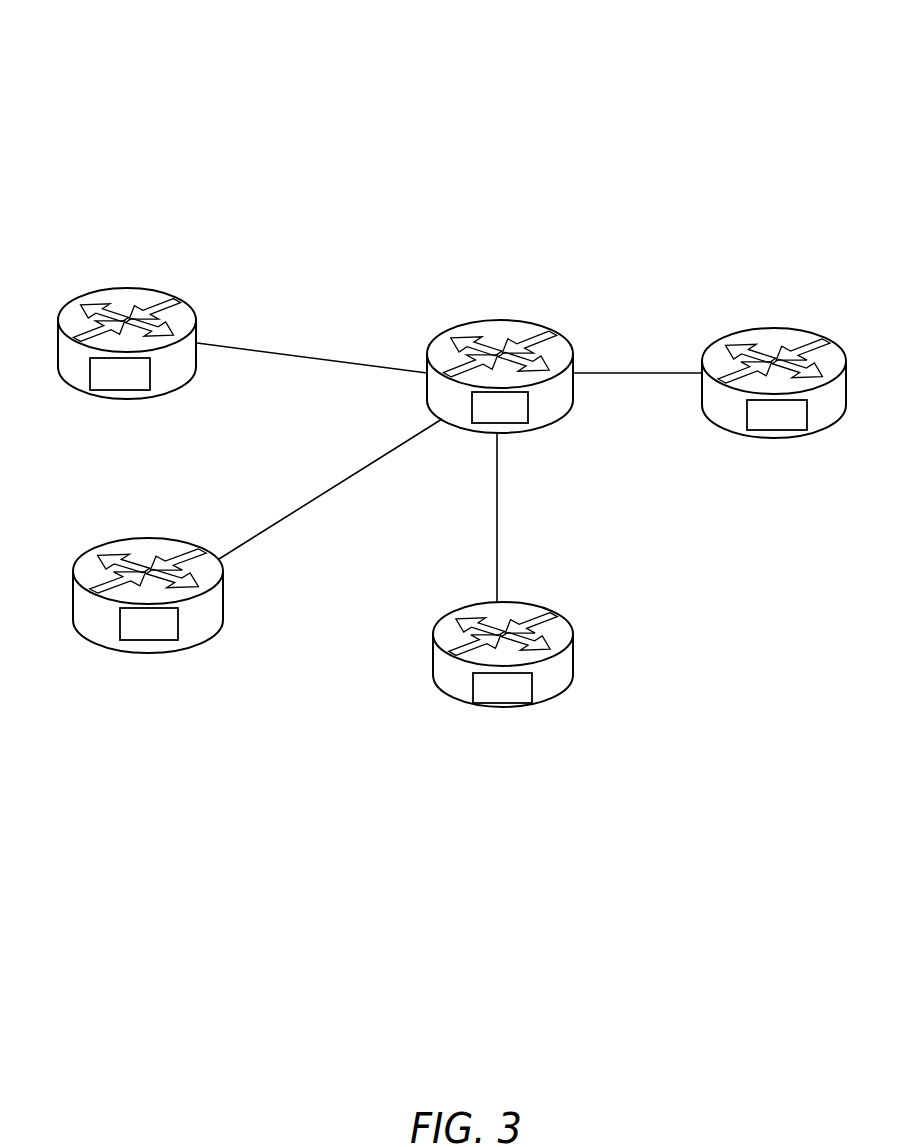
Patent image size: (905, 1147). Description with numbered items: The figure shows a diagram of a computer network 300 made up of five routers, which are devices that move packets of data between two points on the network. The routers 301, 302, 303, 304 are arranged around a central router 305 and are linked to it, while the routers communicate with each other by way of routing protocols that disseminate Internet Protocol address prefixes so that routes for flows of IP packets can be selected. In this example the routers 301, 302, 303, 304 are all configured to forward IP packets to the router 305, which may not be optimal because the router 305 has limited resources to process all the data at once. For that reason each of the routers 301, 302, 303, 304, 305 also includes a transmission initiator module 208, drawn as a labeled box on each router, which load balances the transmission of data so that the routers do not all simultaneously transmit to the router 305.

The computer network 300 is at (713, 75).
The router 301 is at (165, 290).
The router 302 is at (528, 602).
The router 303 is at (783, 327).
The router 304 is at (162, 537).
The router 305 is at (508, 320).
The transmission initiator module 208 is at (102, 386).